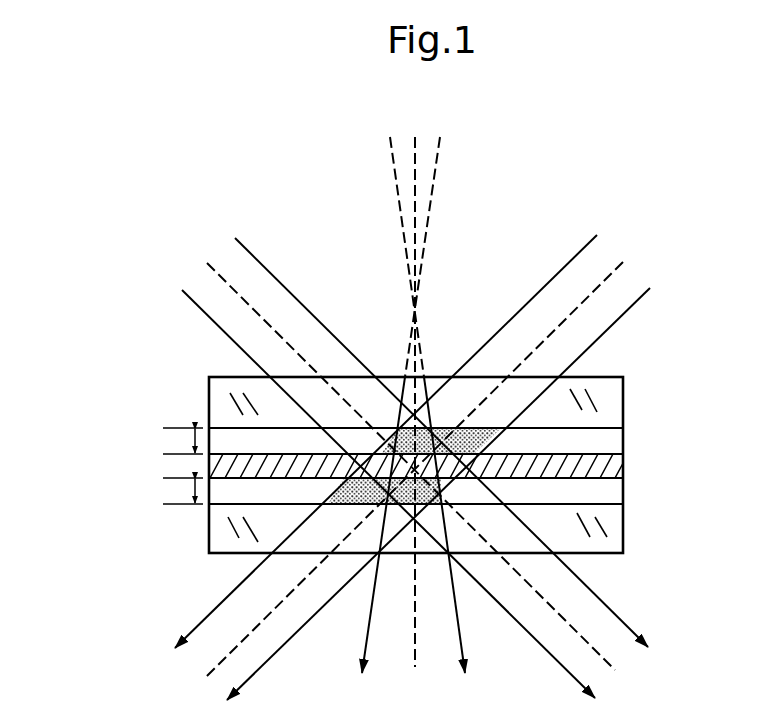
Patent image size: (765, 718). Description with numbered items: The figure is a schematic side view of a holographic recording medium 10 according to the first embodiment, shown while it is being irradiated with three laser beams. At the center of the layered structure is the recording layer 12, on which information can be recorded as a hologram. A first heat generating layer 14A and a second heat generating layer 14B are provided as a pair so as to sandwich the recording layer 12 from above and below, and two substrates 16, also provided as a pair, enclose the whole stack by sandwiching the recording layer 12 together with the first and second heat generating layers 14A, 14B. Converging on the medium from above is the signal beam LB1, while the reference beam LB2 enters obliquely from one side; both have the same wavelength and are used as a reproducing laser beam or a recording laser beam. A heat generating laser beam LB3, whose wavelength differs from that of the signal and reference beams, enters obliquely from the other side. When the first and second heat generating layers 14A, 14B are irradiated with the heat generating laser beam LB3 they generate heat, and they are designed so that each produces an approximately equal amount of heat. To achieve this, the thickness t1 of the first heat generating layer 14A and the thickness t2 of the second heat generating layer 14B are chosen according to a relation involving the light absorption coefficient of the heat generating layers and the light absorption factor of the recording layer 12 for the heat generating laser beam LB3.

The holographic recording medium 10 is at (698, 380).
The recording layer 12 is at (613, 468).
The first heat generating layer 14A is at (612, 442).
The second heat generating layer 14B is at (610, 492).
The substrate 16 is at (613, 398).
The signal beam LB1 is at (430, 160).
The reference beam LB2 is at (243, 271).
The heat generating laser beam LB3 is at (623, 297).
The thickness of the first heat generating layer t1 is at (183, 441).
The thickness of the second heat generating layer t2 is at (183, 491).